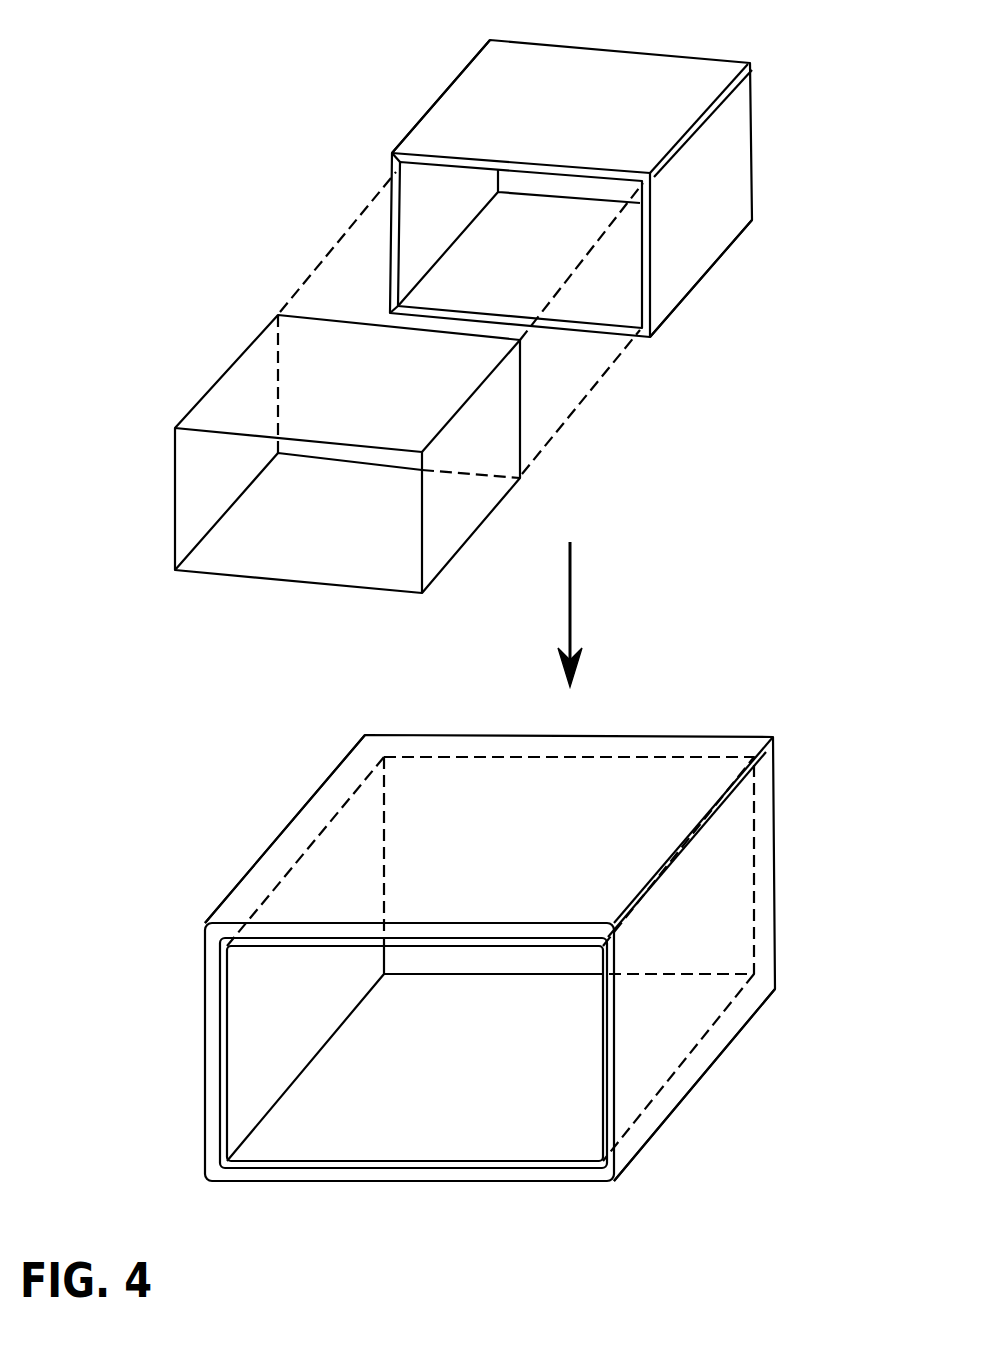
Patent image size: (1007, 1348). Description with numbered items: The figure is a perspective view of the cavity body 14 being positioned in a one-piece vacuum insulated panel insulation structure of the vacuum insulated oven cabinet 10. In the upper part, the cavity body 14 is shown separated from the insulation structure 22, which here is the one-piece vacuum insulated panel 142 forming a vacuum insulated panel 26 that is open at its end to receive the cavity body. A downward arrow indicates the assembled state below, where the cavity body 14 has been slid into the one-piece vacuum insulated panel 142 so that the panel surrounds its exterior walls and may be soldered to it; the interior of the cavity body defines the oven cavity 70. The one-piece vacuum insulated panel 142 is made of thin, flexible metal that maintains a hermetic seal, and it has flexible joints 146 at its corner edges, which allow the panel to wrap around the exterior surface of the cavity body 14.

The vacuum insulated oven cabinet 10 is at (825, 858).
The cavity body 14 is at (203, 380).
The insulation structure 22 is at (772, 152).
The vacuum insulated panel 26 is at (653, 237).
The oven cavity 70 is at (365, 1045).
The one-piece vacuum insulated panel 142 is at (392, 160).
The flexible joint 146 is at (710, 107).